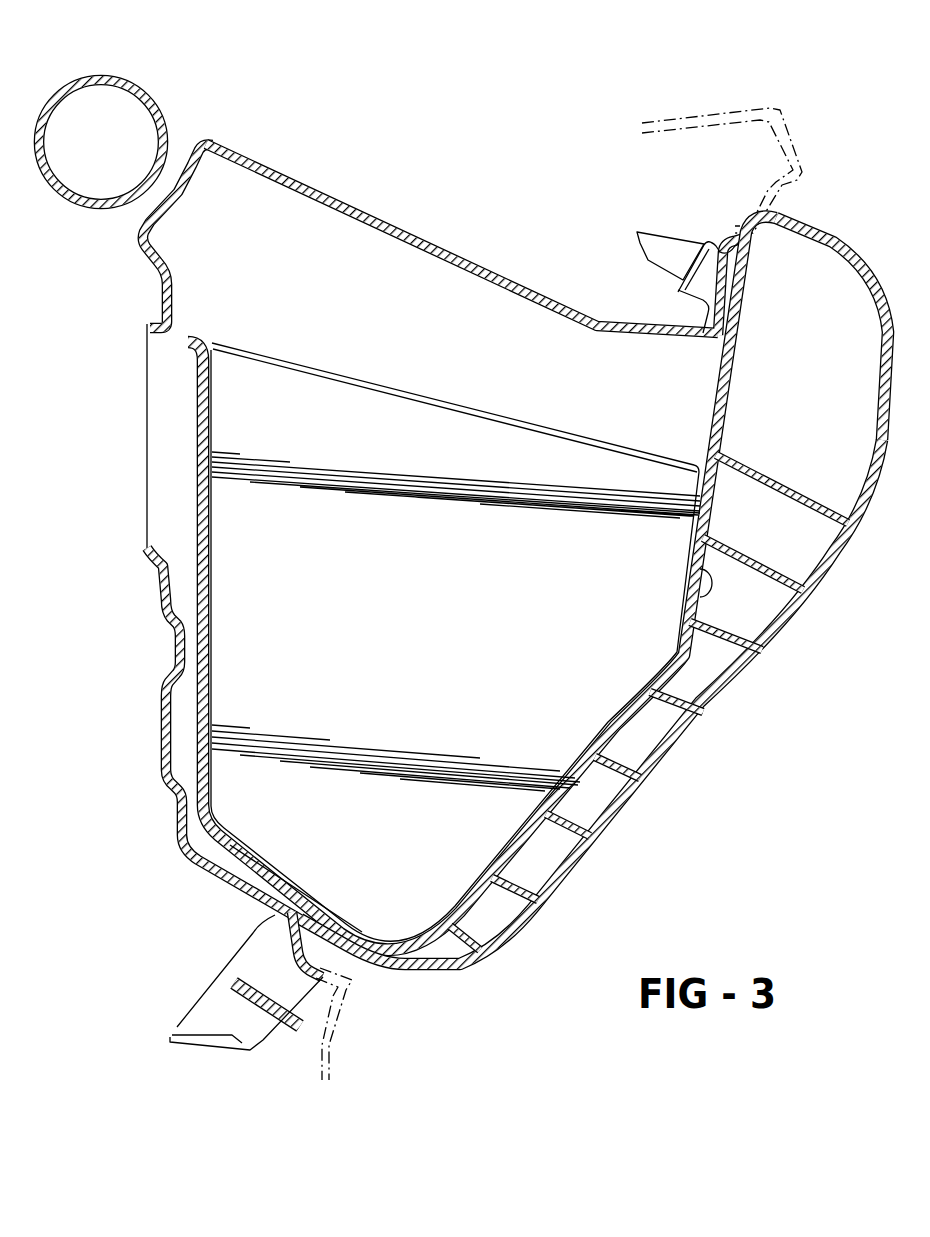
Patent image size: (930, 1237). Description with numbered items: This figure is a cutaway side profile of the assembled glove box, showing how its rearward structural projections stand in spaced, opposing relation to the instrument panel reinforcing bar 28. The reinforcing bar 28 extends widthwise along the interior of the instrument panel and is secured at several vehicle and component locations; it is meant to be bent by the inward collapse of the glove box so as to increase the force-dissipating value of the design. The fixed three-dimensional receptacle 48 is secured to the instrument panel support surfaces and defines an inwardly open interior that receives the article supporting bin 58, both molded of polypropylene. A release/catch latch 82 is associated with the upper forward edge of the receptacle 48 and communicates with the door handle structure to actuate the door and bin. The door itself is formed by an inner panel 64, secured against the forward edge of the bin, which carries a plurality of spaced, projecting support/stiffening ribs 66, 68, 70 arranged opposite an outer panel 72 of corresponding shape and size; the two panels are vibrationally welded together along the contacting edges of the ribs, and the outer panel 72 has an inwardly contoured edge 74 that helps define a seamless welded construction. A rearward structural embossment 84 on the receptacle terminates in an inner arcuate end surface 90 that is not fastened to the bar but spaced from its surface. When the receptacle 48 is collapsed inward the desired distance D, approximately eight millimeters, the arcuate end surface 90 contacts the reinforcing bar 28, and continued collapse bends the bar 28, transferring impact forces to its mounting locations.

The reinforcing bar 28 is at (103, 77).
The desired distance D is at (100, 213).
The inner arcuate end surface 90 is at (183, 167).
The rearward structural embossment 84 is at (390, 217).
The release/catch latch 82 is at (713, 257).
The inwardly contoured edge 74 is at (833, 233).
The outer panel 72 is at (797, 606).
The support/stiffening rib 66 is at (740, 631).
The support/stiffening rib 68 is at (680, 700).
The support/stiffening rib 70 is at (627, 760).
The inner panel 64 is at (697, 597).
The receptacle 48 is at (163, 600).
The article supporting bin 58 is at (250, 817).